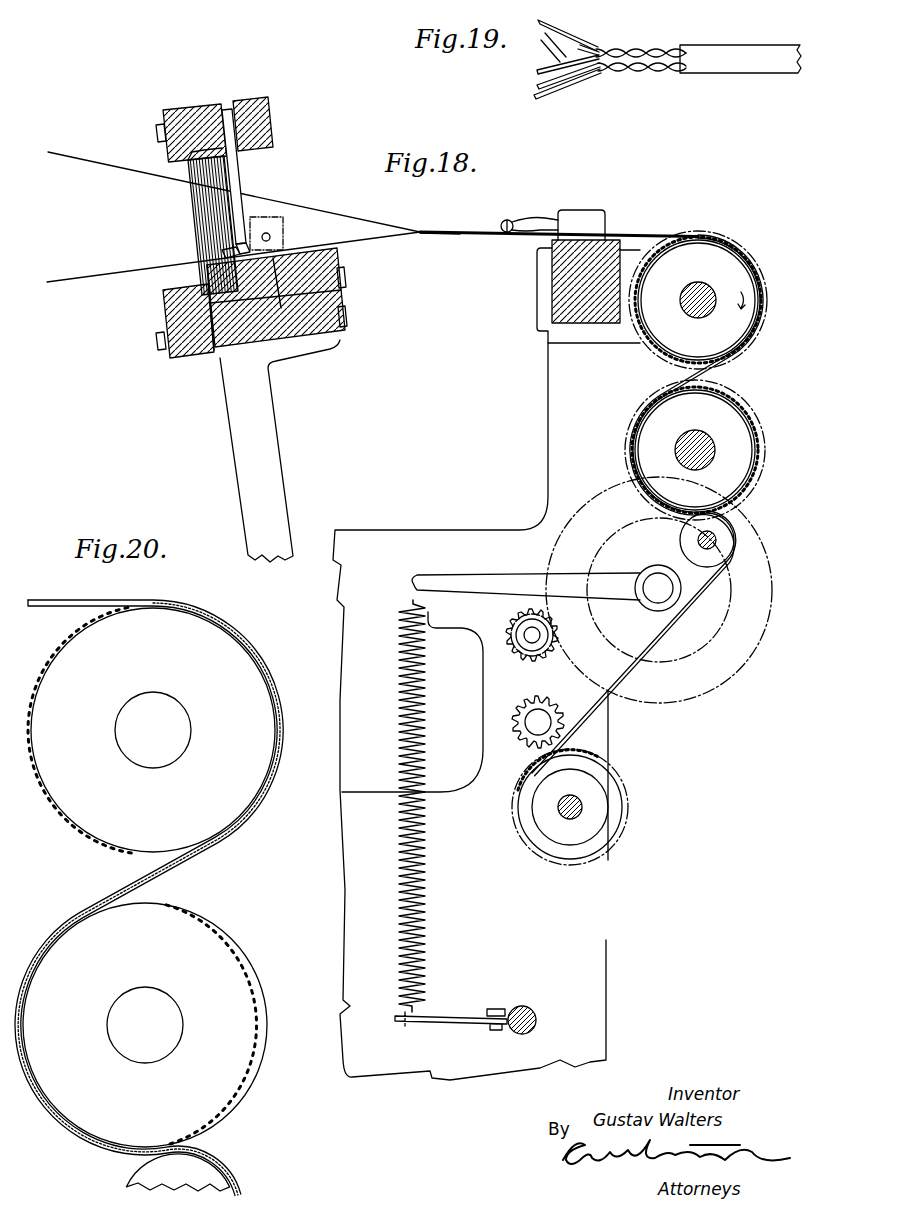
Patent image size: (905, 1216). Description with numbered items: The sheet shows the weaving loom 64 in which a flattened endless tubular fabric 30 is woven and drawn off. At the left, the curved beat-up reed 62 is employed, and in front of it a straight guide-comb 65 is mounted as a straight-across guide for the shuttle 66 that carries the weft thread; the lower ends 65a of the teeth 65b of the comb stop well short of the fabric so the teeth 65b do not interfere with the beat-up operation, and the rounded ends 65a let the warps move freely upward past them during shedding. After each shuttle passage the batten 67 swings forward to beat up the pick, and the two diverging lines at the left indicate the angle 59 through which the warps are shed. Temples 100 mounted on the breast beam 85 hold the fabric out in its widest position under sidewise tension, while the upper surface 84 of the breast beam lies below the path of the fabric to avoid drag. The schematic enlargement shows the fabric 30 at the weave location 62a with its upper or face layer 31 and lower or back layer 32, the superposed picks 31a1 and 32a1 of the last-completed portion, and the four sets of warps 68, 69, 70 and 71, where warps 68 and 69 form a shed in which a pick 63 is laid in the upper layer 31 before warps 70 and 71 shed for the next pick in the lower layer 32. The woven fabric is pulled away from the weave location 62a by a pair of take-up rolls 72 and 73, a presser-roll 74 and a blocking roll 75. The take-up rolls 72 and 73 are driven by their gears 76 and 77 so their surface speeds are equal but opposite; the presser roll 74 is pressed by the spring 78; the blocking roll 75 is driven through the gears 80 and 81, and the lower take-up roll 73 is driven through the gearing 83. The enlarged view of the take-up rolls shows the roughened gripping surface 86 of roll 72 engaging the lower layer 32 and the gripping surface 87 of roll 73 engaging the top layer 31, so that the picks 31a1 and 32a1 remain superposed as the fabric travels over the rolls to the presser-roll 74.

In FIG. 19, the tubular fabric 30 is at (765, 70).
In FIG. 18, the tubular fabric 30 is at (459, 236).
In FIG. 20, the tubular fabric 30 is at (50, 596).
In FIG. 19, the upper or face layer 31 is at (665, 46).
In FIG. 20, the upper or face layer 31 is at (205, 614).
In FIG. 19, the lower or back layer 32 is at (656, 74).
In FIG. 20, the lower or back layer 32 is at (226, 628).
In FIG. 19, the superposed pick of upper layer 31a1 is at (606, 48).
In FIG. 19, the superposed pick of lower layer 32a1 is at (600, 76).
In FIG. 19, the angle of strip feed 59 is at (544, 44).
In FIG. 18, the angle of strip feed 59 is at (70, 165).
In FIG. 18, the curved beat-up reed 62 is at (190, 211).
In FIG. 18, the weave location 62a is at (420, 234).
In FIG. 19, the pick 63 is at (578, 47).
In FIG. 18, the weaving loom 64 is at (550, 378).
In FIG. 18, the straight guide-comb 65 is at (241, 178).
In FIG. 18, the lower ends of the teeth 65a is at (222, 252).
In FIG. 18, the teeth of the guide comb 65b is at (248, 182).
In FIG. 18, the shuttle 66 is at (283, 232).
In FIG. 18, the batten 67 is at (346, 300).
In FIG. 19, the warps 68 is at (566, 40).
In FIG. 19, the warps 69 is at (536, 64).
In FIG. 19, the warps 70 is at (536, 82).
In FIG. 19, the warps 71 is at (546, 100).
In FIG. 18, the upper take-up roll 72 is at (742, 279).
In FIG. 20, the upper take-up roll 72 is at (100, 818).
In FIG. 18, the lower take-up roll 73 is at (738, 444).
In FIG. 20, the lower take-up roll 73 is at (235, 972).
In FIG. 18, the presser-roll 74 is at (684, 539).
In FIG. 20, the presser-roll 74 is at (132, 1176).
In FIG. 18, the blocking roll 75 is at (602, 804).
In FIG. 18, the gear of take-up roll 72 76 is at (704, 230).
In FIG. 18, the gear of take-up roll 73 77 is at (760, 404).
In FIG. 18, the spring 78 is at (398, 700).
In FIG. 18, the gear 80 is at (512, 722).
In FIG. 18, the gear 81 is at (510, 810).
In FIG. 18, the gearing 83 is at (720, 628).
In FIG. 18, the upper surface of the breast beam 84 is at (583, 236).
In FIG. 18, the breast beam 85 is at (548, 283).
In FIG. 18, the gripping surface 86 is at (652, 336).
In FIG. 20, the gripping surface 86 is at (45, 796).
In FIG. 18, the gripping surface 87 is at (755, 470).
In FIG. 20, the gripping surface 87 is at (236, 938).
In FIG. 18, the temples 100 is at (504, 220).